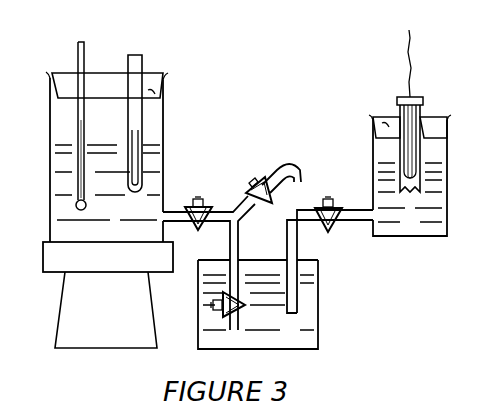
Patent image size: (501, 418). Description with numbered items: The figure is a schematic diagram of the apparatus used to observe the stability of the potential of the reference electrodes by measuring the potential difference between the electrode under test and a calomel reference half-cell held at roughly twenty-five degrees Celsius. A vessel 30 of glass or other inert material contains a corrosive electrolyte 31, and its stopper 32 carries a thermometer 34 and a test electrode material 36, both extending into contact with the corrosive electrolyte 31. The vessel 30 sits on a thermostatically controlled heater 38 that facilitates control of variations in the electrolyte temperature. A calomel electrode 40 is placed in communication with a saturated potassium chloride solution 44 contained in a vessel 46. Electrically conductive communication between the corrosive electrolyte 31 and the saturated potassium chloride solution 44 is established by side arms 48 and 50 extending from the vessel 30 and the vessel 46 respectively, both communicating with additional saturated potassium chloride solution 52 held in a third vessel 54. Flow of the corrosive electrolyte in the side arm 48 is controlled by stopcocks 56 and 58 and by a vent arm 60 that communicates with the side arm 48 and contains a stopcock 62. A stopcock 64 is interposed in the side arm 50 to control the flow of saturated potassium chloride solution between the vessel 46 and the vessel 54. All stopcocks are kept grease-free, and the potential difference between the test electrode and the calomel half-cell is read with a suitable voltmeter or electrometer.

The vessel 30 is at (50, 128).
The corrosive electrolyte 31 is at (60, 214).
The stopper 32 is at (55, 75).
The thermometer 34 is at (78, 62).
The test electrode material 36 is at (128, 64).
The thermostatically controlled heater 38 is at (43, 268).
The calomel electrode 40 is at (370, 98).
The saturated potassium chloride solution 44 is at (403, 233).
The vessel 46 is at (373, 142).
The side arm 48 is at (172, 214).
The side arm 50 is at (364, 220).
The additional saturated potassium chloride solution 52 is at (212, 330).
The third vessel 54 is at (306, 346).
The stopcock 56 is at (208, 206).
The stopcock 58 is at (240, 305).
The vent arm 60 is at (287, 178).
The stopcock 62 is at (257, 203).
The stopcock 64 is at (330, 200).